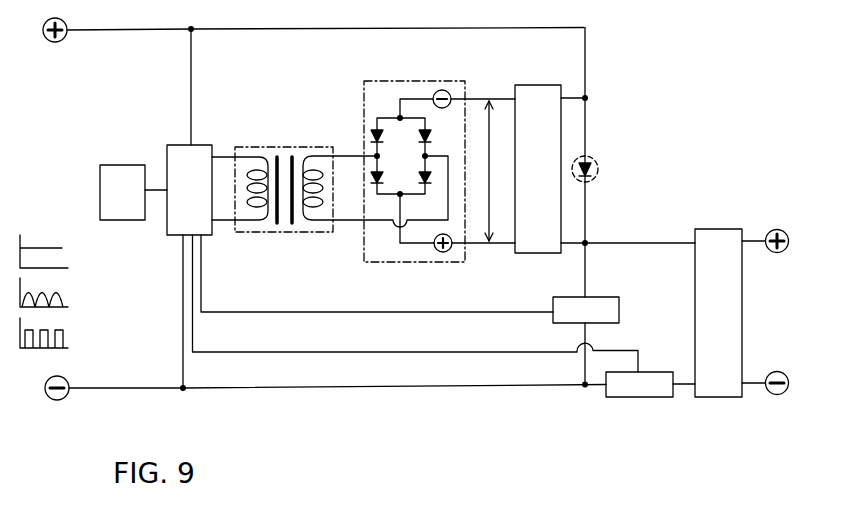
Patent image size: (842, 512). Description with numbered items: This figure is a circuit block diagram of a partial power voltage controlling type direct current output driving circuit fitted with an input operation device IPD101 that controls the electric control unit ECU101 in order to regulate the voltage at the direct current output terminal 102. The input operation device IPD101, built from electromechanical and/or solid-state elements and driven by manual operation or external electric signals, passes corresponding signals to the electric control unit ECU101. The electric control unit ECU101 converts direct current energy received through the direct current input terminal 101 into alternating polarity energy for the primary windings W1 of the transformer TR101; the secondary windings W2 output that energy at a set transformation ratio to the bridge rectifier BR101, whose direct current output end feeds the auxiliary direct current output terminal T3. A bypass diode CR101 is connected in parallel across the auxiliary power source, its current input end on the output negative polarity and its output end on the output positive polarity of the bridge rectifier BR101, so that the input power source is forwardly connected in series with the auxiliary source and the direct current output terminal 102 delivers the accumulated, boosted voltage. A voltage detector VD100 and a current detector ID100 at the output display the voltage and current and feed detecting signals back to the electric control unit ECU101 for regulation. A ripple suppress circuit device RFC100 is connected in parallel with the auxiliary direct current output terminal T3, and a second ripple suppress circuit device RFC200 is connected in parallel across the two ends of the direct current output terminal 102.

The direct current input terminal 101 is at (44, 250).
The input operation device IPD101 is at (115, 220).
The electric control unit ECU101 is at (167, 162).
The transformer TR101 is at (330, 195).
The primary windings W1 is at (243, 191).
The secondary windings W2 is at (332, 188).
The bridge rectifier BR101 is at (385, 81).
The auxiliary direct current output terminal T3 is at (489, 171).
The ripple suppress circuit device RFC100 is at (545, 85).
The diode CR101 is at (600, 172).
The voltage detector VD100 is at (577, 297).
The current detector ID100 is at (647, 397).
The ripple suppress circuit device RFC200 is at (695, 313).
The direct current output terminal 102 is at (778, 312).